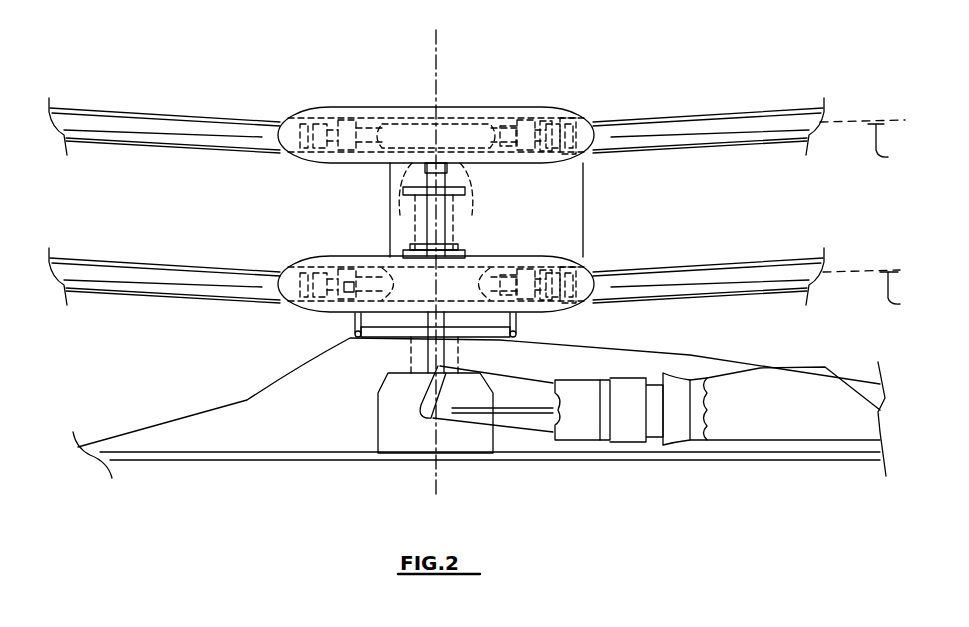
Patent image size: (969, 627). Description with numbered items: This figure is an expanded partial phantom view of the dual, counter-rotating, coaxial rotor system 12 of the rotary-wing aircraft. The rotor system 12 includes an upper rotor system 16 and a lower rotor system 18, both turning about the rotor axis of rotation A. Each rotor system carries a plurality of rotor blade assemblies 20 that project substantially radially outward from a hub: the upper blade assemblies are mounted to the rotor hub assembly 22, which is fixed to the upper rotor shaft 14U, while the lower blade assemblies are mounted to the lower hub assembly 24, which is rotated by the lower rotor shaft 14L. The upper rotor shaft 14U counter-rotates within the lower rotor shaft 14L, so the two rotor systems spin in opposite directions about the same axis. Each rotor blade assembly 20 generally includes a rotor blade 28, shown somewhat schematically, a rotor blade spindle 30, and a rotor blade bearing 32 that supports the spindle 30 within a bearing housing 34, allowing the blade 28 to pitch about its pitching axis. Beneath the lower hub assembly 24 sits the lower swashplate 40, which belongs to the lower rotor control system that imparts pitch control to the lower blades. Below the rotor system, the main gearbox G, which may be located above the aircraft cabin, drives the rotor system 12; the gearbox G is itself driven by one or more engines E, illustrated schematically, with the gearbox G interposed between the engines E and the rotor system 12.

The axis of rotation A is at (437, 40).
The dual, counter-rotating, coaxial rotor system 12 is at (280, 325).
The upper rotor shaft 14U is at (413, 210).
The lower rotor shaft 14L is at (415, 227).
The upper rotor system 16 is at (477, 113).
The lower rotor system 18 is at (479, 252).
The rotor blade assembly 20 is at (755, 270).
The rotor hub assembly 22 is at (460, 110).
The lower hub assembly 24 is at (472, 300).
The rotor blade 28 is at (705, 125).
The rotor blade spindle 30 is at (586, 112).
The rotor blade bearing 32 is at (559, 112).
The bearing housing 34 is at (507, 112).
The lower swashplate 40 is at (388, 332).
The main gearbox G is at (410, 428).
The engine E is at (577, 423).